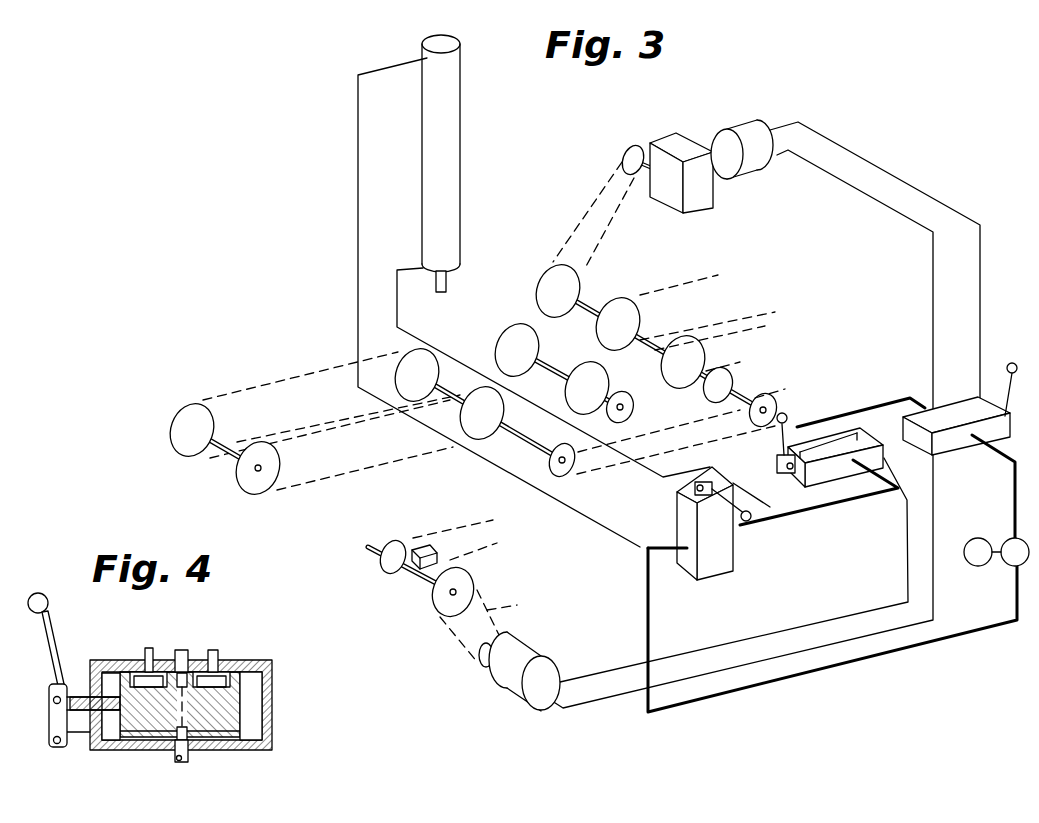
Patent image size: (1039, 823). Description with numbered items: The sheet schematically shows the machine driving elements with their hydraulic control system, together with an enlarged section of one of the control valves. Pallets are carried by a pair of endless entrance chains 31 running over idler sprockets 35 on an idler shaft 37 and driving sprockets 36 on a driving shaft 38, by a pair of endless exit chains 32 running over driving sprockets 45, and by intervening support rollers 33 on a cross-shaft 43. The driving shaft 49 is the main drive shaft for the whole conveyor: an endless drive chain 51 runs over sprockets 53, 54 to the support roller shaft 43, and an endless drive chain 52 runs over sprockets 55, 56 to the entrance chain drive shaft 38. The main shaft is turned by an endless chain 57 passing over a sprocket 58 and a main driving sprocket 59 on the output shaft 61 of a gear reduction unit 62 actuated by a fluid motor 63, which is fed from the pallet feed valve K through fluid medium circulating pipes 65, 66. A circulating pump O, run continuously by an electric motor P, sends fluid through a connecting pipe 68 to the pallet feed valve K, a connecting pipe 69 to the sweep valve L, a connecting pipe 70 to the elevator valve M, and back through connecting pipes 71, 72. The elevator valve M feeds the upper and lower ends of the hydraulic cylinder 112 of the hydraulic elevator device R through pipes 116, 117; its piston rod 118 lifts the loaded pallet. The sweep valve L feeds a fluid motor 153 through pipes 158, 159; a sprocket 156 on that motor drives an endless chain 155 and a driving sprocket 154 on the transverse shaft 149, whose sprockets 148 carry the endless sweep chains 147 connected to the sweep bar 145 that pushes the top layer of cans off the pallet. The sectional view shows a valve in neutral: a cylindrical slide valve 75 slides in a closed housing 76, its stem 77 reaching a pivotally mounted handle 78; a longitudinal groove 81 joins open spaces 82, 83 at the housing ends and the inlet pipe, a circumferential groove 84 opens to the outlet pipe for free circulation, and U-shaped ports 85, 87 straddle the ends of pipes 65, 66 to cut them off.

In FIG. 3, the hydraulic cylinder 112 is at (460, 108).
In FIG. 3, the hydraulic elevator device R is at (466, 152).
In FIG. 3, the fluid medium circulating pipe 116 is at (358, 233).
In FIG. 3, the fluid medium circulating pipe 117 is at (398, 310).
In FIG. 3, the piston rod 118 is at (446, 282).
In FIG. 3, the endless entrance chains 31 is at (311, 376).
In FIG. 3, the endless exit chains 32 is at (703, 283).
In FIG. 3, the support rollers 33 is at (512, 336).
In FIG. 3, the idler sprockets 35 is at (213, 417).
In FIG. 3, the driving sprockets 36 is at (406, 358).
In FIG. 3, the idler shaft 37 is at (226, 453).
In FIG. 3, the driving shaft 38 is at (489, 425).
In FIG. 3, the cross-shaft 43 is at (561, 380).
In FIG. 3, the driving sprockets 45 is at (638, 312).
In FIG. 3, the driving shaft 49 is at (593, 300).
In FIG. 3, the endless drive chain 51 is at (656, 390).
In FIG. 3, the endless drive chain 52 is at (662, 452).
In FIG. 3, the sprocket 53 is at (727, 373).
In FIG. 3, the sprocket 54 is at (632, 406).
In FIG. 3, the sprocket 55 is at (771, 391).
In FIG. 3, the sprocket 56 is at (567, 468).
In FIG. 3, the endless chain 57 is at (578, 226).
In FIG. 3, the sprocket 58 is at (548, 283).
In FIG. 3, the main driving sprocket 59 is at (631, 148).
In FIG. 3, the output shaft 61 is at (643, 173).
In FIG. 3, the gear reduction unit 62 is at (675, 143).
In FIG. 3, the fluid motor 63 is at (740, 130).
In FIG. 3, the fluid medium circulating pipe 65 is at (850, 150).
In FIG. 4, the fluid medium circulating pipe 65 is at (154, 656).
In FIG. 3, the fluid medium circulating pipe 66 is at (843, 182).
In FIG. 4, the fluid medium circulating pipe 66 is at (216, 656).
In FIG. 3, the connecting pipe 68 is at (1015, 487).
In FIG. 4, the connecting pipe 68 is at (181, 756).
In FIG. 3, the connecting pipe 69 is at (869, 411).
In FIG. 4, the connecting pipe 69 is at (184, 655).
In FIG. 3, the connecting pipe 70 is at (844, 499).
In FIG. 3, the connecting pipe 71 is at (663, 551).
In FIG. 3, the connecting pipe 72 is at (650, 643).
In FIG. 3, the pallet feed valve K is at (963, 443).
In FIG. 3, the sweep valve L is at (832, 473).
In FIG. 3, the elevator valve M is at (708, 572).
In FIG. 3, the electric motor P is at (972, 565).
In FIG. 3, the circulating pump O is at (1009, 538).
In FIG. 3, the fluid medium circulating pipe 158 is at (758, 634).
In FIG. 3, the fluid medium circulating pipe 159 is at (817, 650).
In FIG. 3, the sweep bar 145 is at (432, 552).
In FIG. 3, the endless sweep chains 147 is at (479, 539).
In FIG. 3, the sprockets 148 is at (383, 565).
In FIG. 3, the transverse shaft 149 is at (427, 582).
In FIG. 3, the fluid motor 153 is at (528, 655).
In FIG. 3, the driving sprocket 154 is at (463, 589).
In FIG. 3, the endless chain 155 is at (526, 607).
In FIG. 3, the sprocket 156 is at (483, 667).
In FIG. 4, the cylindrical slide valve 75 is at (232, 710).
In FIG. 4, the closed housing 76 is at (262, 733).
In FIG. 4, the stem 77 is at (106, 705).
In FIG. 4, the pivotally mounted handle 78 is at (47, 627).
In FIG. 4, the longitudinal groove 81 is at (141, 744).
In FIG. 4, the open space 82 is at (250, 691).
In FIG. 4, the open space 83 is at (112, 727).
In FIG. 4, the circumferential groove 84 is at (190, 733).
In FIG. 4, the U-shaped port 85 is at (133, 675).
In FIG. 4, the U-shaped port 87 is at (236, 673).